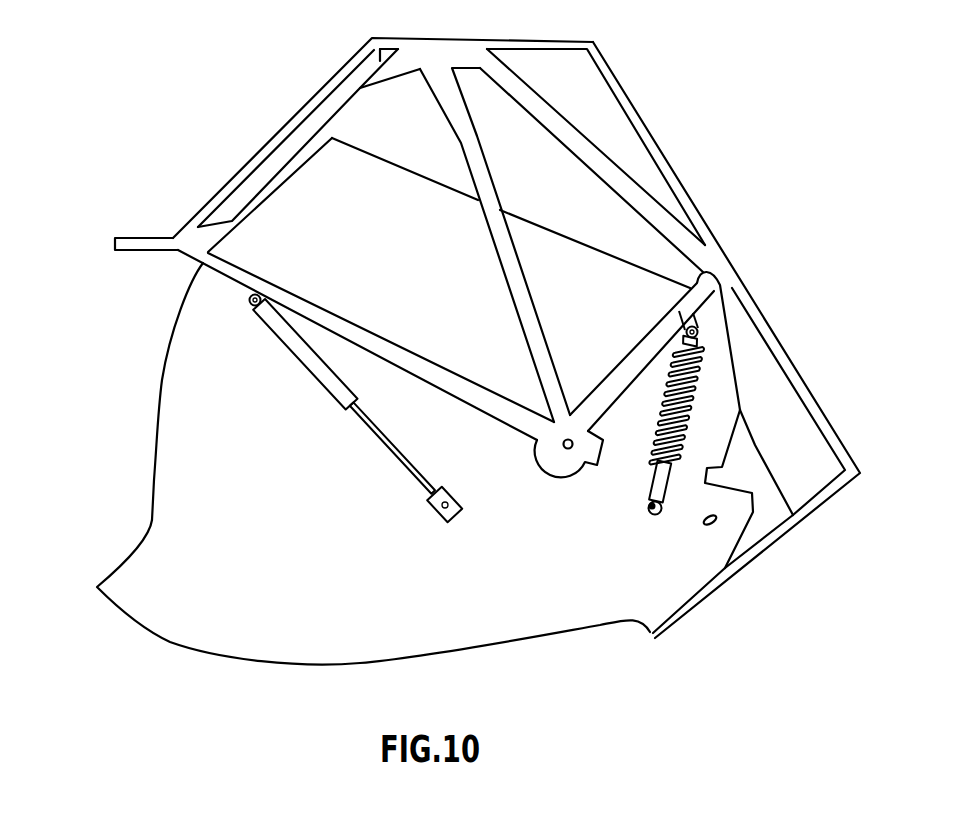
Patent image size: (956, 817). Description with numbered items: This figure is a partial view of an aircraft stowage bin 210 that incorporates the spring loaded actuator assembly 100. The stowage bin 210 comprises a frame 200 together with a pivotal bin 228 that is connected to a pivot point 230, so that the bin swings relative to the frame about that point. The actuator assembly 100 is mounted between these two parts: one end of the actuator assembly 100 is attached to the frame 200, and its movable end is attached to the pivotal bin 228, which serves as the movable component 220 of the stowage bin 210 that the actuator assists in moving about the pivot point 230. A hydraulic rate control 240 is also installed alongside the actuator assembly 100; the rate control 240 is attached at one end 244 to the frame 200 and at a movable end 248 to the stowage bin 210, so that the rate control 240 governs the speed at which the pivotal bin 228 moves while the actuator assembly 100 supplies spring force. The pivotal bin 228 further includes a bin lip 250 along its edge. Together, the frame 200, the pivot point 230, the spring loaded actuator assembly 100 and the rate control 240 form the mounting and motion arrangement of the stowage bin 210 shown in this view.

The spring loaded actuator assembly 100 is at (683, 413).
The frame 200 is at (487, 338).
The stowage bin 210 is at (228, 130).
The movable component 220 is at (344, 463).
The pivotal bin 228 is at (148, 428).
The pivot point 230 is at (568, 474).
The rate control 240 is at (296, 419).
The end of rate control 244 is at (249, 300).
The movable end of rate control 248 is at (442, 514).
The bin lip 250 is at (97, 590).